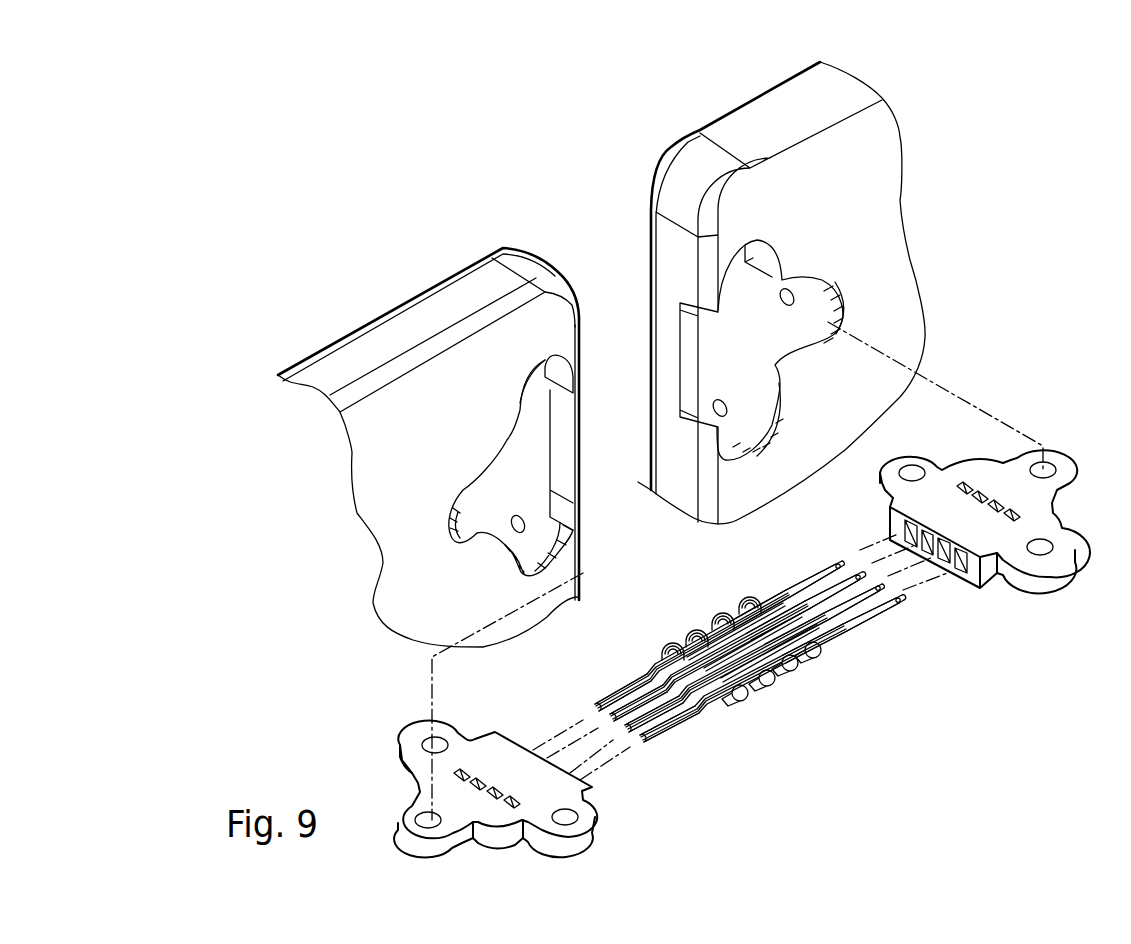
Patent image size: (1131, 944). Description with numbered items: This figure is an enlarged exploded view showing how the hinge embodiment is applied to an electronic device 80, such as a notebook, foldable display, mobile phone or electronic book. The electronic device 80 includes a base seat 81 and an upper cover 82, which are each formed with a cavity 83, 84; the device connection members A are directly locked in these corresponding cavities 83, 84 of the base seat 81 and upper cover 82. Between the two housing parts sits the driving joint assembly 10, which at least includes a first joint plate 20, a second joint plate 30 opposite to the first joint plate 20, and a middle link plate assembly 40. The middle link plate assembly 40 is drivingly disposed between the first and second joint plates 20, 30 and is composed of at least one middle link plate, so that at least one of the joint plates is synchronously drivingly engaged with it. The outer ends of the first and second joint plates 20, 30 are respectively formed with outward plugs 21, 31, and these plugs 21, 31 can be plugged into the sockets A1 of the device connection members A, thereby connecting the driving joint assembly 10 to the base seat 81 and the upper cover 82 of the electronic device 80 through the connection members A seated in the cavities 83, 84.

The driving joint assembly 10 is at (703, 810).
The first joint plate 20 is at (853, 627).
The plug 21 is at (888, 603).
The second joint plate 30 is at (697, 718).
The plug 31 is at (658, 740).
The middle link plate assembly 40 is at (783, 677).
The electronic device 80 is at (550, 105).
The base seat 81 is at (687, 182).
The upper cover 82 is at (467, 293).
The cavity 83 is at (717, 355).
The cavity 84 is at (540, 450).
The device connection member A is at (1037, 517).
The socket A1 is at (957, 580).